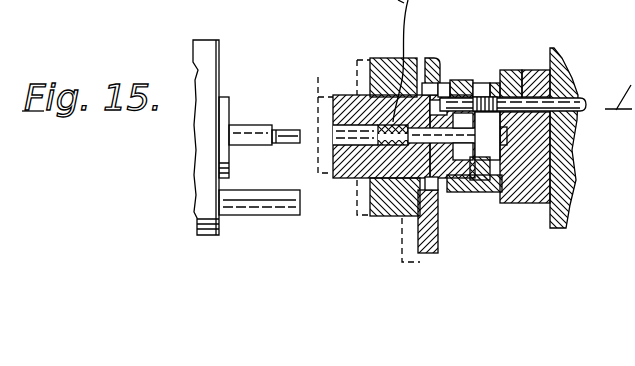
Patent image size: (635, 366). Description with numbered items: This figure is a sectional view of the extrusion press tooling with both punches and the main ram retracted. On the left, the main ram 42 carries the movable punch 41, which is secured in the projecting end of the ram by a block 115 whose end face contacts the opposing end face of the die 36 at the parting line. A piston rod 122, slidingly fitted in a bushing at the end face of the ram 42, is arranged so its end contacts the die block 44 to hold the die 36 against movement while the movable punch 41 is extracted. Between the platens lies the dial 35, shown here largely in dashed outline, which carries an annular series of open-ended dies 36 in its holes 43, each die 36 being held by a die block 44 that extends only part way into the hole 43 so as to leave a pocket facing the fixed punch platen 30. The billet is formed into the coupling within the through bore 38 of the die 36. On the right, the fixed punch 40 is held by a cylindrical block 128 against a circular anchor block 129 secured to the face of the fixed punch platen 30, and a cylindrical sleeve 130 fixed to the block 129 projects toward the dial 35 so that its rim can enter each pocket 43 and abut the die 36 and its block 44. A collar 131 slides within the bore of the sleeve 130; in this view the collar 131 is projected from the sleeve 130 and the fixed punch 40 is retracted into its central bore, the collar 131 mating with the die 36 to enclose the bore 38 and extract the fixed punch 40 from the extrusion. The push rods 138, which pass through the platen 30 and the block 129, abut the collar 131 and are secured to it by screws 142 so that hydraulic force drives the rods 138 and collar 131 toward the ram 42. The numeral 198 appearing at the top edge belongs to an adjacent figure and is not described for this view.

The reference numeral from adjacent figure 198 is at (21, 8).
The main ram 42 is at (210, 55).
The block 115 is at (221, 97).
The movable punch 41 is at (282, 127).
The piston rod 122 is at (250, 207).
The die 36 is at (350, 95).
The through bore 38 is at (338, 143).
The die block 44 is at (387, 60).
The hole 43 is at (452, 87).
The fixed punch 40 is at (457, 83).
The screw 142 is at (488, 80).
The cylindrical sleeve 130 is at (506, 70).
The circular block 129 is at (543, 70).
The cylindrical block 128 is at (493, 180).
The fixed punch platen 30 is at (575, 55).
The push rod 138 is at (582, 97).
The dial 35 is at (416, 245).
The collar 131 is at (443, 175).